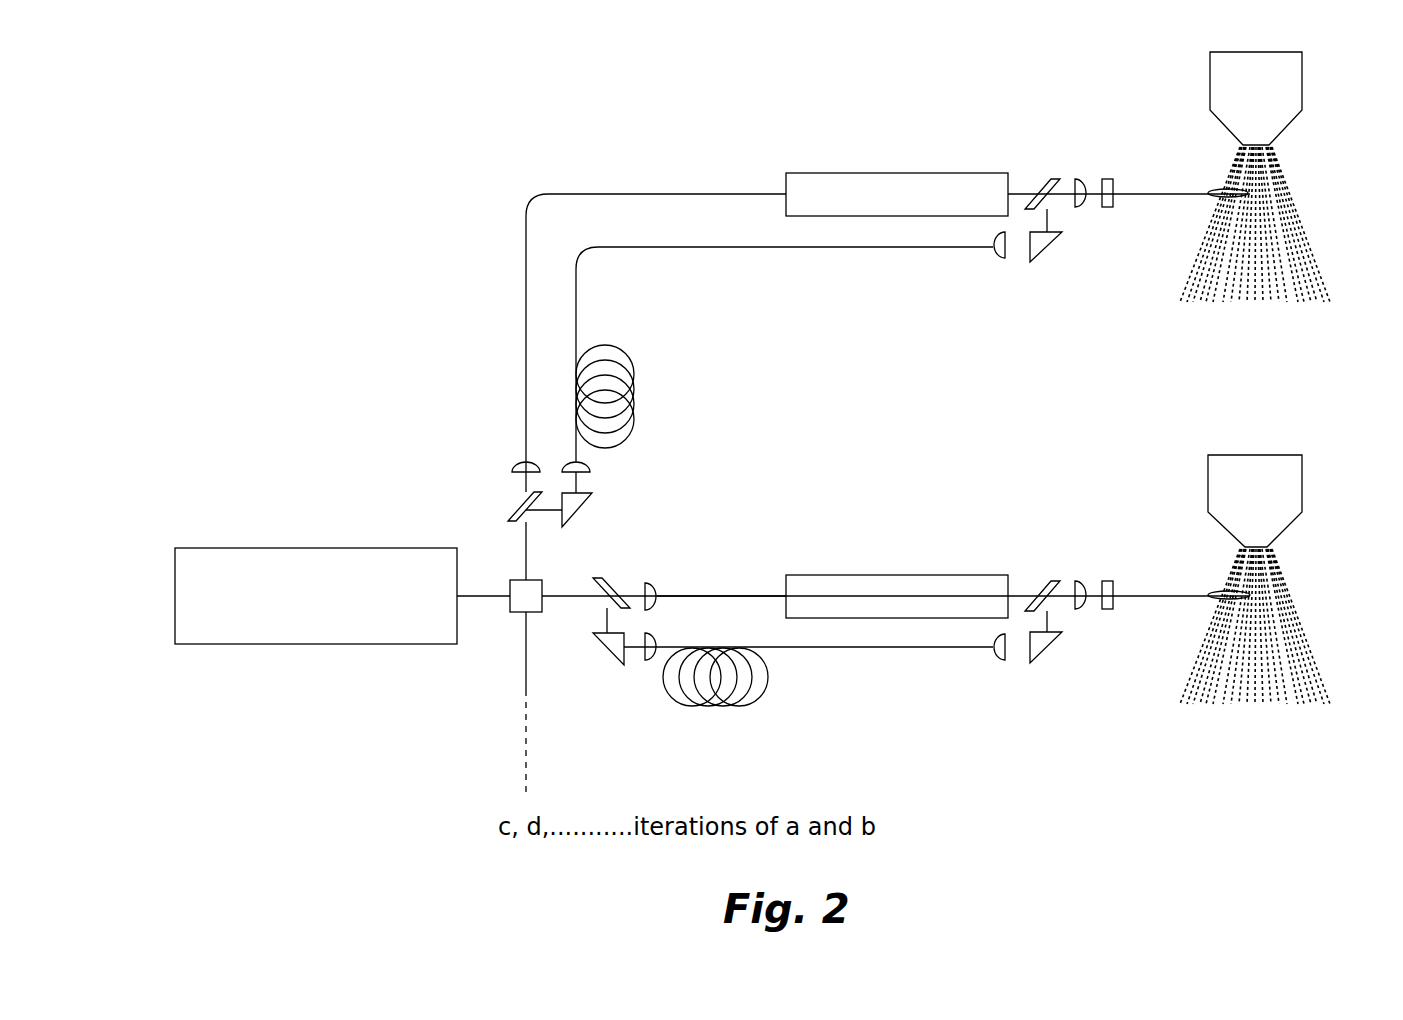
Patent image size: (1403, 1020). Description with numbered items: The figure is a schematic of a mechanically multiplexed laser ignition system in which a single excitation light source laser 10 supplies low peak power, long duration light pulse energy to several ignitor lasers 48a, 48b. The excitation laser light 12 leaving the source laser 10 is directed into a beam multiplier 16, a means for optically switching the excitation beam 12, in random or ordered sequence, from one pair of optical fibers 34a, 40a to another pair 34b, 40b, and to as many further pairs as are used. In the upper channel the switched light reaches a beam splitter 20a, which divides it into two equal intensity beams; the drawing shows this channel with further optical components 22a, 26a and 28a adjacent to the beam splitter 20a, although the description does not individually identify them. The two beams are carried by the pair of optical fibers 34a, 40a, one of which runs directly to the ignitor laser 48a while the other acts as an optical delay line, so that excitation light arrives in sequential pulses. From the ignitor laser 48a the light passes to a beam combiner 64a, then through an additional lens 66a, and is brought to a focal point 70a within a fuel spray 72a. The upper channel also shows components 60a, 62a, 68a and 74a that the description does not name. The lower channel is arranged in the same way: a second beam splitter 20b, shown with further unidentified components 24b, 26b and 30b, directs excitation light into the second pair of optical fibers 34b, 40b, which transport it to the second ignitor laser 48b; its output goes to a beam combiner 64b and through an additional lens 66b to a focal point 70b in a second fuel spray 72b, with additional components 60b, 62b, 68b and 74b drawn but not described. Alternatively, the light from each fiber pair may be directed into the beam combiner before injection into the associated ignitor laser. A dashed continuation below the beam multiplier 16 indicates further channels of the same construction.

The excitation light source laser 10 is at (305, 546).
The excitation laser light 12 is at (521, 545).
The beam multiplier 16 is at (536, 578).
The beam splitter 20a is at (517, 503).
The lens 22a is at (521, 465).
The prism 26a is at (585, 511).
The lens 28a is at (592, 466).
The optical fiber 34a is at (650, 252).
The optical fiber 40a is at (650, 190).
The ignitor laser 48a is at (893, 168).
The lens 60a is at (999, 260).
The prism 62a is at (1052, 238).
The beam combiner 64a is at (1047, 176).
The additional lens 66a is at (1081, 177).
The window 68a is at (1107, 177).
The focal point 70a is at (1212, 203).
The fuel spray 72a is at (1309, 218).
The nozzle 74a is at (1307, 79).
The second beam splitter 20b is at (605, 576).
The lens 24b is at (652, 578).
The prism 26b is at (603, 657).
The lens 30b is at (648, 660).
The optical fiber 34b is at (718, 715).
The optical fiber 40b is at (673, 590).
The ignitor laser 48b is at (893, 572).
The lens 60b is at (999, 662).
The prism 62b is at (1052, 638).
The beam combiner 64b is at (1047, 578).
The additional lens 66b is at (1081, 579).
The window 68b is at (1107, 579).
The focal point 70b is at (1212, 605).
The fuel spray 72b is at (1307, 622).
The nozzle 74b is at (1308, 482).